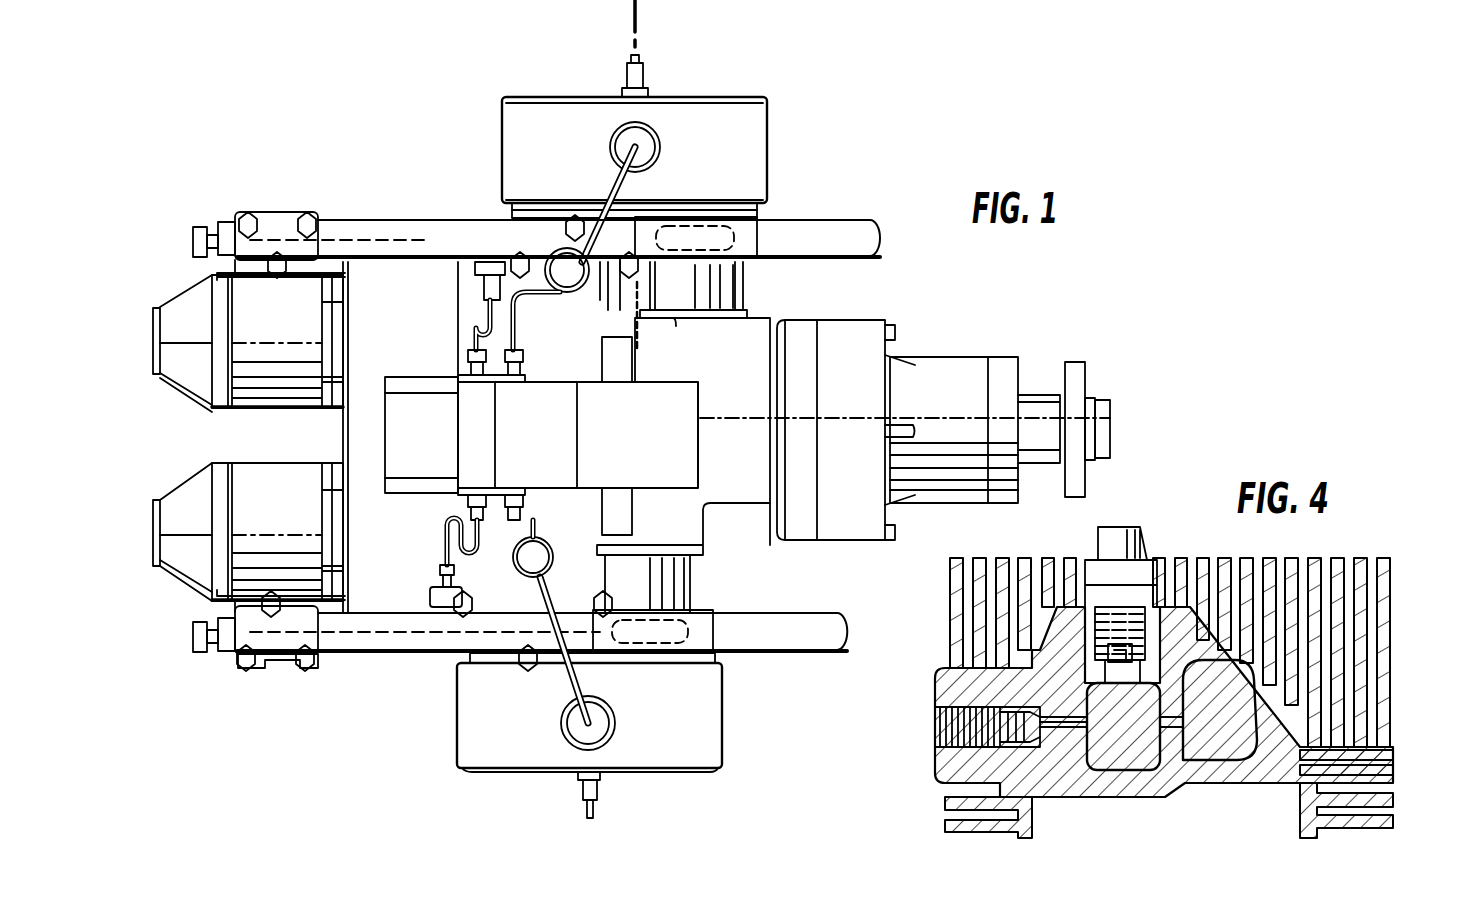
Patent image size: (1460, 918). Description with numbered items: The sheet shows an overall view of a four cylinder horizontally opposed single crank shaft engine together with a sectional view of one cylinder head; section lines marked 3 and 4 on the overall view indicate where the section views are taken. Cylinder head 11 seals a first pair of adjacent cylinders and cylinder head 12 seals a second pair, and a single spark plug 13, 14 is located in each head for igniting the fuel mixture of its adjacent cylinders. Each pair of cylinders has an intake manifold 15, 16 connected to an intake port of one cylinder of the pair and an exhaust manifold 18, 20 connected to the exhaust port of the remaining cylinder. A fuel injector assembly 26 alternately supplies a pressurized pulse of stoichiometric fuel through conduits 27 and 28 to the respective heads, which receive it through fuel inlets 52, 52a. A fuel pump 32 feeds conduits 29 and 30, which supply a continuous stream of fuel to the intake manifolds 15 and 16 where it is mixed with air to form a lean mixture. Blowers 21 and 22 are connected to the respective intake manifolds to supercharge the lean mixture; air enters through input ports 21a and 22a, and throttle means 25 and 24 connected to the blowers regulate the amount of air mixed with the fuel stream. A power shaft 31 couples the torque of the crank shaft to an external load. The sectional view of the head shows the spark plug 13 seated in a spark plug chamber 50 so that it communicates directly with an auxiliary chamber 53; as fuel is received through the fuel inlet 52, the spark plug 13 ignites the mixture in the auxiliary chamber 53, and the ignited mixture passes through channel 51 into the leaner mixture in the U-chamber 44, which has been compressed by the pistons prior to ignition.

In FIG. 1, the section line 3- 3 is at (498, 108).
In FIG. 1, the section line 4- 4 is at (645, 350).
In FIG. 1, the cylinder head 11 is at (768, 166).
In FIG. 4, the cylinder head 11 is at (950, 622).
In FIG. 1, the cylinder head 12 is at (722, 726).
In FIG. 1, the spark plug 13 is at (643, 77).
In FIG. 4, the spark plug 13 is at (1140, 549).
In FIG. 1, the spark plug 14 is at (598, 796).
In FIG. 1, the intake manifold 15 is at (463, 228).
In FIG. 1, the intake manifold 16 is at (394, 655).
In FIG. 1, the exhaust manifold 18 is at (846, 228).
In FIG. 1, the exhaust manifold 20 is at (783, 618).
In FIG. 1, the blower 21 is at (254, 400).
In FIG. 1, the input port 21a is at (157, 330).
In FIG. 1, the blower 22 is at (185, 483).
In FIG. 1, the input port 22a is at (157, 538).
In FIG. 1, the throttle means 24 is at (192, 636).
In FIG. 1, the throttle means 25 is at (192, 241).
In FIG. 1, the fuel injector assembly 26 is at (549, 390).
In FIG. 1, the conduit 27 is at (520, 346).
In FIG. 1, the conduit 28 is at (522, 575).
In FIG. 1, the conduit 29 is at (478, 330).
In FIG. 1, the conduit 30 is at (448, 558).
In FIG. 1, the power shaft 31 is at (1078, 391).
In FIG. 1, the fuel pump 32 is at (464, 428).
In FIG. 4, the U-chamber 44 is at (1220, 710).
In FIG. 4, the spark plug chamber 50 is at (1150, 666).
In FIG. 4, the channel 51 is at (1162, 727).
In FIG. 1, the fuel inlet 52 is at (647, 151).
In FIG. 4, the fuel inlet 52 is at (940, 735).
In FIG. 1, the fuel inlet 52a is at (603, 720).
In FIG. 4, the auxiliary chamber 53 is at (1123, 726).